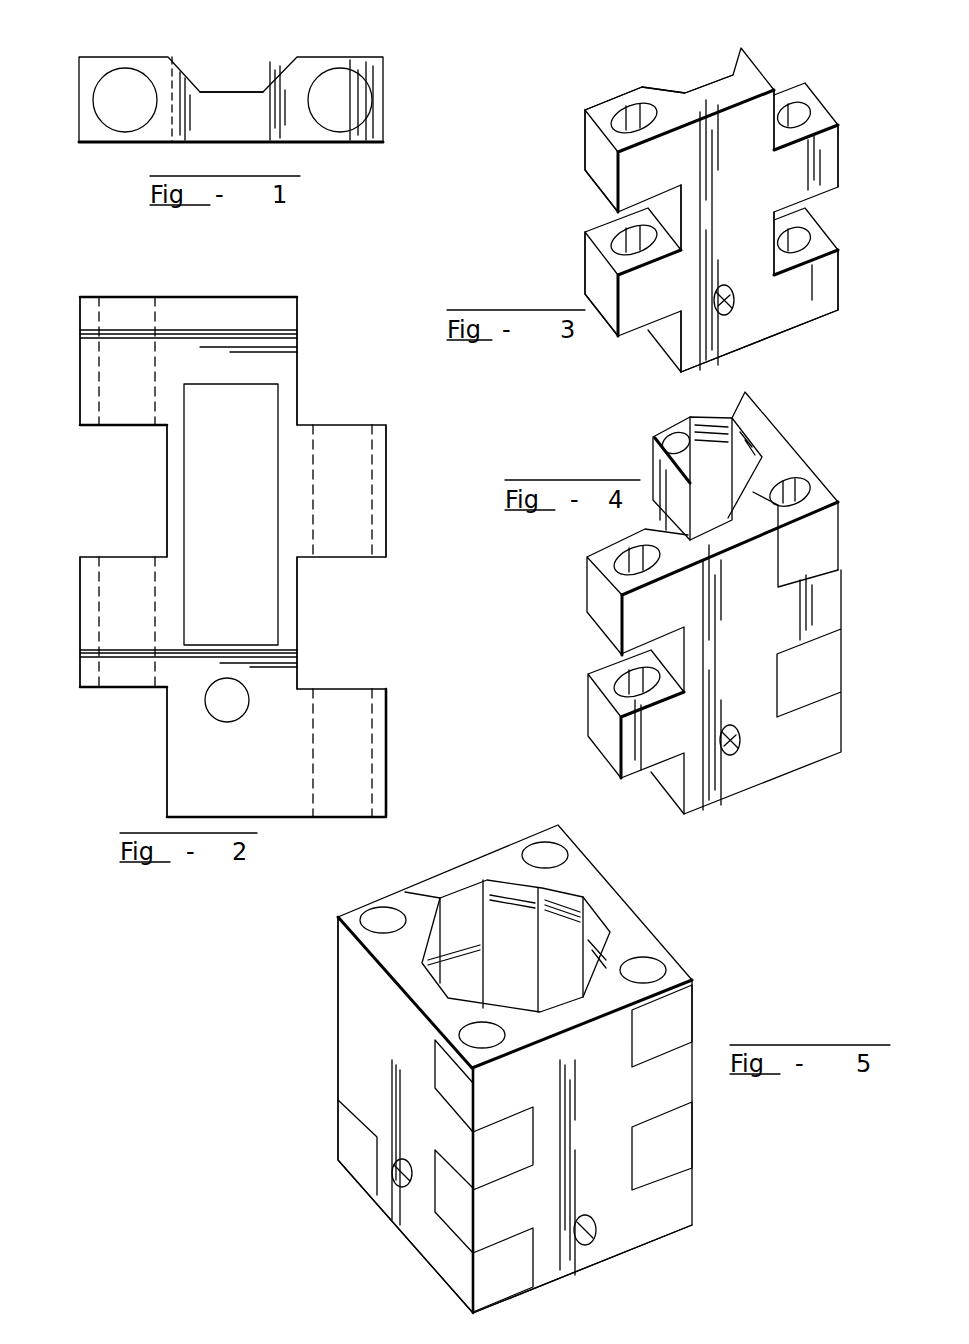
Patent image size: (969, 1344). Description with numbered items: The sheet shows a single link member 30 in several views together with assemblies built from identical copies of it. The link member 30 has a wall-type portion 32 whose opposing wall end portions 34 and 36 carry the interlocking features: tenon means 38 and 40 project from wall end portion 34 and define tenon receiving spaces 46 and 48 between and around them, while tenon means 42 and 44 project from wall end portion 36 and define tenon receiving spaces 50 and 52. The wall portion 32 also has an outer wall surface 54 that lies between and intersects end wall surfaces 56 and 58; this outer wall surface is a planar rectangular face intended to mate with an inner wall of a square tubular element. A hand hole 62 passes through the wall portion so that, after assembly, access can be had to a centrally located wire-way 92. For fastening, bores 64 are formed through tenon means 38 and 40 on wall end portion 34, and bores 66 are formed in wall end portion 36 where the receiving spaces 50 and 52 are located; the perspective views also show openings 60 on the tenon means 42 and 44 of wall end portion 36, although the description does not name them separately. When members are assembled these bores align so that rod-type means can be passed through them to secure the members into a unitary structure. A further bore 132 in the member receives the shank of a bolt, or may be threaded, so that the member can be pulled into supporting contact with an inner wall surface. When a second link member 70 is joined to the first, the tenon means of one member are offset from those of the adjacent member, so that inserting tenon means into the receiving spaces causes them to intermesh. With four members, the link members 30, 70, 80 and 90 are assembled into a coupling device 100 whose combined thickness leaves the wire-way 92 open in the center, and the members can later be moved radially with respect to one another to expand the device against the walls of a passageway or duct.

In FIG. 1, the link member 30 is at (222, 80).
In FIG. 2, the link member 30 is at (296, 292).
In FIG. 3, the link member 30 is at (640, 62).
In FIG. 4, the link member 30 is at (760, 797).
In FIG. 5, the link member 30 is at (618, 1260).
In FIG. 2, the wall-type portion 32 is at (212, 297).
In FIG. 3, the wall-type portion 32 is at (700, 100).
In FIG. 2, the wall end portion 34 is at (88, 297).
In FIG. 3, the wall end portion 34 is at (600, 98).
In FIG. 2, the wall end portion 36 is at (382, 822).
In FIG. 3, the wall end portion 36 is at (805, 330).
In FIG. 2, the tenon means 38 is at (80, 388).
In FIG. 3, the tenon means 38 is at (600, 158).
In FIG. 2, the tenon means 40 is at (80, 602).
In FIG. 3, the tenon means 40 is at (597, 275).
In FIG. 2, the tenon means 42 is at (387, 475).
In FIG. 3, the tenon means 42 is at (840, 152).
In FIG. 2, the tenon means 44 is at (387, 745).
In FIG. 3, the tenon means 44 is at (840, 280).
In FIG. 2, the tenon receiving space 46 is at (150, 475).
In FIG. 3, the tenon receiving space 46 is at (605, 212).
In FIG. 2, the tenon receiving space 48 is at (158, 790).
In FIG. 3, the tenon receiving space 48 is at (655, 357).
In FIG. 2, the tenon receiving space 50 is at (312, 360).
In FIG. 3, the tenon receiving space 50 is at (778, 82).
In FIG. 2, the tenon receiving space 52 is at (315, 600).
In FIG. 3, the tenon receiving space 52 is at (818, 205).
In FIG. 1, the outer wall surface 54 is at (237, 143).
In FIG. 1, the end wall surface 56 is at (78, 100).
In FIG. 1, the end wall surface 58 is at (383, 93).
In FIG. 3, the bore in right projections 60 is at (808, 118).
In FIG. 2, the hand hole 62 is at (248, 382).
In FIG. 2, the bores 64 is at (150, 325).
In FIG. 3, the bores 64 is at (640, 130).
In FIG. 4, the bores 64 is at (637, 620).
In FIG. 2, the bores 66 is at (372, 475).
In FIG. 4, the link member 70 is at (784, 428).
In FIG. 5, the link member 70 is at (652, 918).
In FIG. 5, the link member 80 is at (501, 1043).
In FIG. 5, the link member 90 is at (410, 1250).
In FIG. 5, the wire-way 92 is at (560, 930).
In FIG. 5, the coupling device 100 is at (438, 1289).
In FIG. 2, the bore 132 is at (212, 703).
In FIG. 3, the bore 132 is at (734, 300).
In FIG. 4, the bore 132 is at (741, 740).
In FIG. 5, the bore 132 is at (400, 1170).